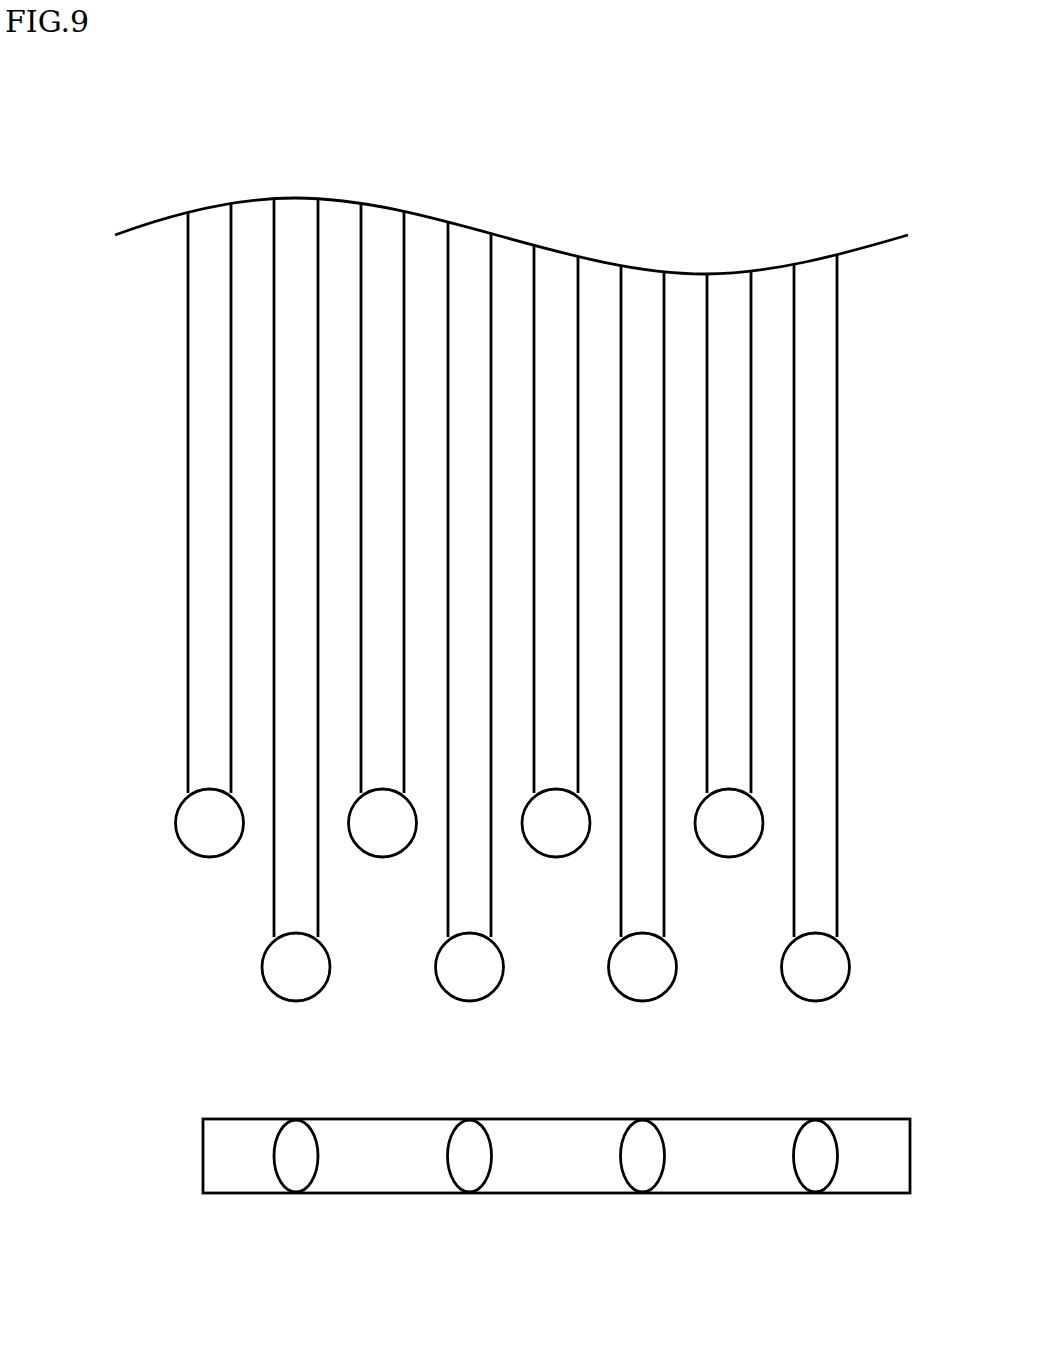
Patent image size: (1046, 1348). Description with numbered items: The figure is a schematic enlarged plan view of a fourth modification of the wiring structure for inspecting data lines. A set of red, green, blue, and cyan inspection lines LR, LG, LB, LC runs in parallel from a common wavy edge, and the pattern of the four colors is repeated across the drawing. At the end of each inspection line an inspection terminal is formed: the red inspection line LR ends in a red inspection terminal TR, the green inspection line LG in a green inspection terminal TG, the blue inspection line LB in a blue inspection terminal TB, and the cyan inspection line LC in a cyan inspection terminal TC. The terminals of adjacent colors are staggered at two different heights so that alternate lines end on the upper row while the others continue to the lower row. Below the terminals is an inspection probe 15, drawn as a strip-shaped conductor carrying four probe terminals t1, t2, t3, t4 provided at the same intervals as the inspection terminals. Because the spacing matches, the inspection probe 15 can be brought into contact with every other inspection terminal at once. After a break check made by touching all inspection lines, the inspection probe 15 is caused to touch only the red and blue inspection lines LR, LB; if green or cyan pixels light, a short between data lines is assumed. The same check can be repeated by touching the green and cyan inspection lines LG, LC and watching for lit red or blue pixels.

The red inspection line LR is at (209, 207).
The green inspection line LG is at (296, 198).
The blue inspection line LB is at (383, 207).
The cyan inspection line LC is at (470, 227).
The red inspection terminal TR is at (201, 838).
The green inspection terminal TG is at (295, 985).
The blue inspection terminal TB is at (382, 840).
The cyan inspection terminal TC is at (470, 985).
The inspection probe 15 is at (243, 1195).
The probe terminal t1 is at (305, 1175).
The probe terminal t2 is at (478, 1175).
The probe terminal t3 is at (650, 1175).
The probe terminal t4 is at (822, 1175).